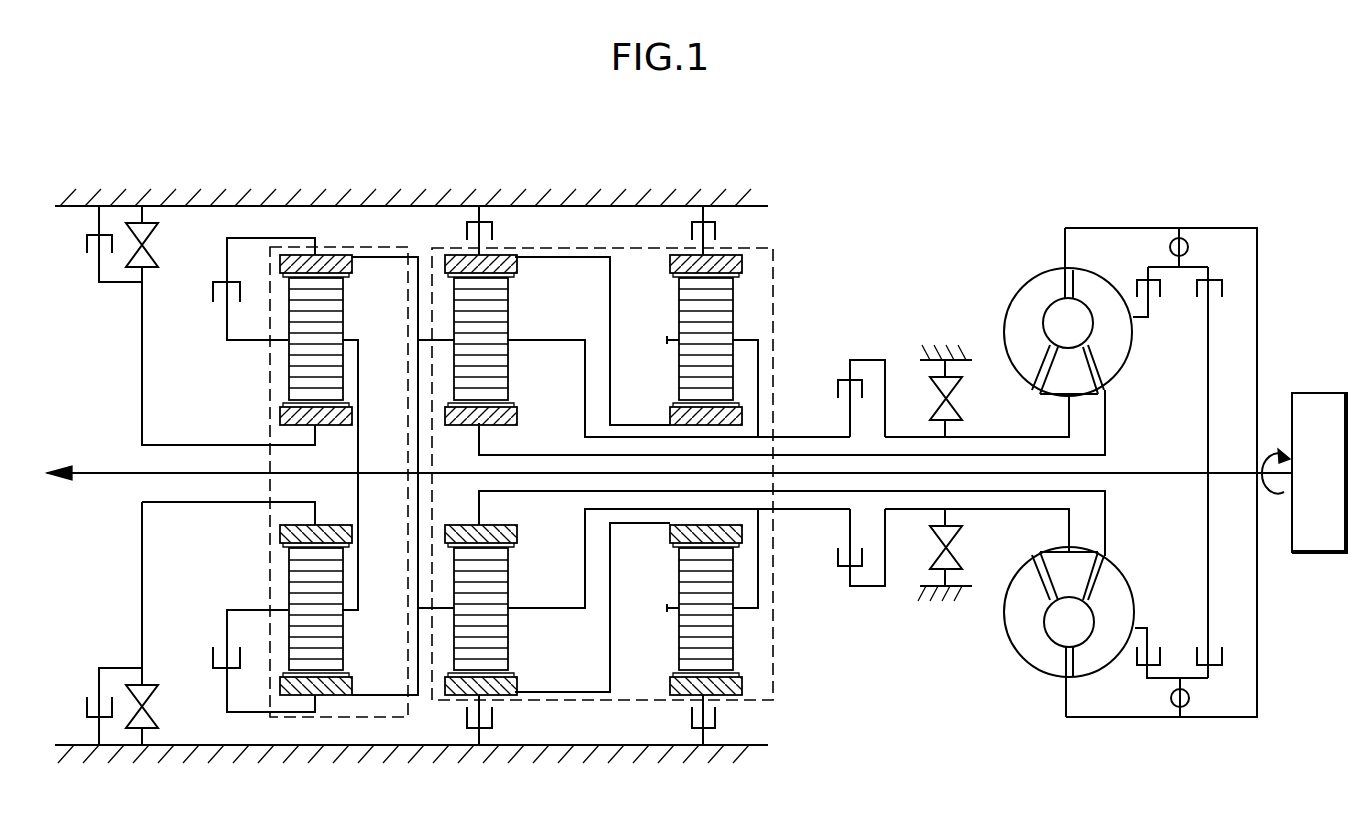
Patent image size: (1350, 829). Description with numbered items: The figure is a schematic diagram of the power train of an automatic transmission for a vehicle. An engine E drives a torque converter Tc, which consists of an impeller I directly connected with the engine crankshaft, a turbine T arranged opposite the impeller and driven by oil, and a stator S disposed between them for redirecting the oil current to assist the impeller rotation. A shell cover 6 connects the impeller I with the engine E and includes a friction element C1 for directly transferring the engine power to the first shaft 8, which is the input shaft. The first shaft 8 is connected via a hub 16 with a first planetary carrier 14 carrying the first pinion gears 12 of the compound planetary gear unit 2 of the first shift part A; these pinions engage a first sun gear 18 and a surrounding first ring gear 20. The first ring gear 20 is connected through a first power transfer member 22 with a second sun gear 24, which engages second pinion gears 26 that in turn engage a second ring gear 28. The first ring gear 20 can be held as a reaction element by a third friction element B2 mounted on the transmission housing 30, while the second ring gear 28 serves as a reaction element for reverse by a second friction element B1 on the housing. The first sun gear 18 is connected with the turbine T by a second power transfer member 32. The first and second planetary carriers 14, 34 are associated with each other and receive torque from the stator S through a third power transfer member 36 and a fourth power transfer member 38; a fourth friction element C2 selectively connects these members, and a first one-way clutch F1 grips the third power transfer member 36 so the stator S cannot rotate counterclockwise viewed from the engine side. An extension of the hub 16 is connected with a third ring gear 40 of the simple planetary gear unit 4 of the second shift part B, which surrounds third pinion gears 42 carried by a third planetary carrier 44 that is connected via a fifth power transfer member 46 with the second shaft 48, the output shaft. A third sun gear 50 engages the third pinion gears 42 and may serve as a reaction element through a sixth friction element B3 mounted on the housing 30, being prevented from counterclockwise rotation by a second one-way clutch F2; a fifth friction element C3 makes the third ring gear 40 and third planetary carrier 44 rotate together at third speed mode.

The compound planetary gear unit 2 is at (636, 461).
The simple planetary gear unit 4 is at (316, 427).
The shell cover 6 is at (1159, 227).
The first shaft 8 is at (1162, 473).
The first pinion gears 12 is at (507, 310).
The first planetary carrier 14 is at (548, 340).
The hub 16 is at (408, 458).
The first sun gear 18 is at (515, 414).
The first ring gear 20 is at (515, 263).
The first power transfer member 22 is at (610, 368).
The second sun gear 24 is at (670, 410).
The second pinion gears 26 is at (678, 305).
The second ring gear 28 is at (670, 263).
The transmission housing 30 is at (383, 197).
The second power transfer member 32 is at (1100, 457).
The second planetary carrier 34 is at (756, 340).
The third power transfer member 36 is at (910, 437).
The fourth power transfer member 38 is at (808, 437).
The third ring gear 40 is at (352, 263).
The third pinion gears 42 is at (333, 322).
The third planetary carrier 44 is at (251, 475).
The fifth power transfer member 46 is at (357, 452).
The second shaft 48 is at (94, 470).
The third sun gear 50 is at (281, 410).
The first shift part A is at (790, 255).
The second shift part B is at (313, 243).
The second friction element B1 is at (719, 475).
The third friction element B2 is at (496, 475).
The sixth friction element B3 is at (97, 475).
The friction element C1 is at (1190, 472).
The fourth friction element C2 is at (849, 470).
The fifth friction element C3 is at (232, 365).
The first one-way clutch F1 is at (955, 473).
The second one-way clutch F2 is at (220, 475).
The torque converter Tc is at (1085, 443).
The impeller I is at (1024, 305).
The turbine T is at (1125, 343).
The stator S is at (1055, 390).
The engine E is at (1319, 472).